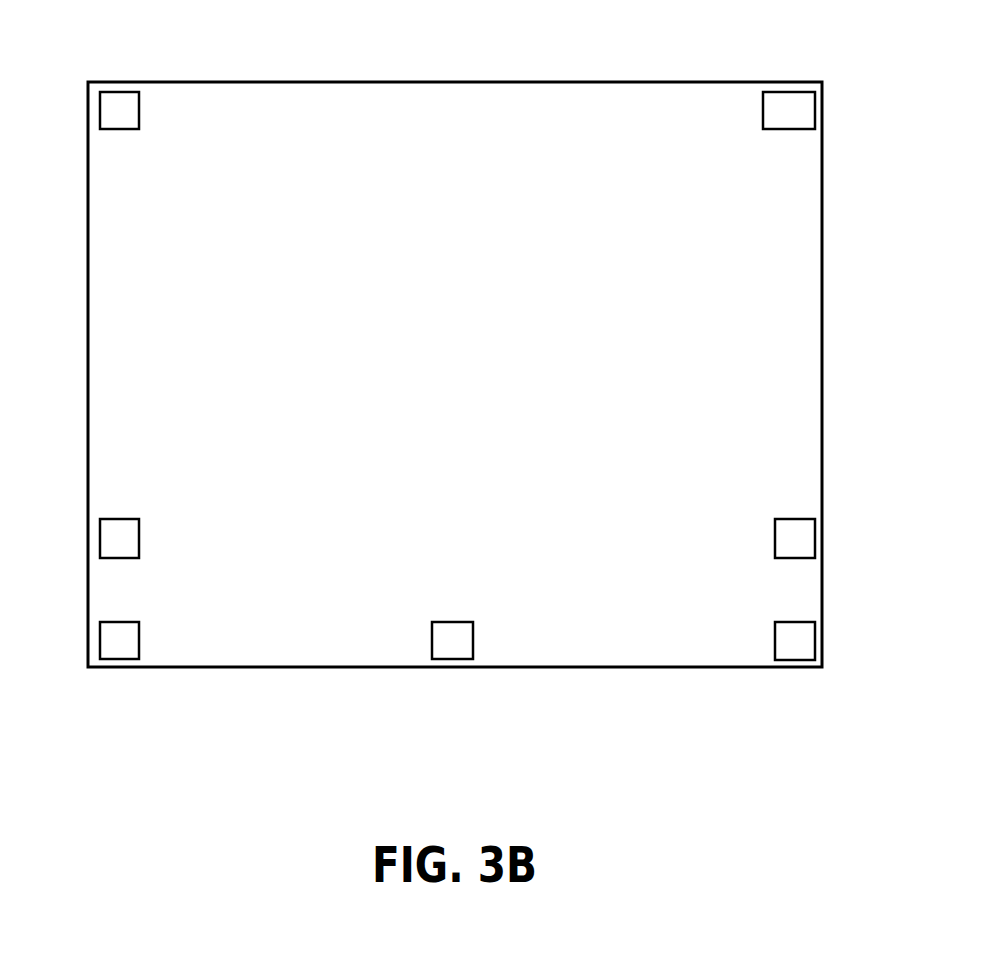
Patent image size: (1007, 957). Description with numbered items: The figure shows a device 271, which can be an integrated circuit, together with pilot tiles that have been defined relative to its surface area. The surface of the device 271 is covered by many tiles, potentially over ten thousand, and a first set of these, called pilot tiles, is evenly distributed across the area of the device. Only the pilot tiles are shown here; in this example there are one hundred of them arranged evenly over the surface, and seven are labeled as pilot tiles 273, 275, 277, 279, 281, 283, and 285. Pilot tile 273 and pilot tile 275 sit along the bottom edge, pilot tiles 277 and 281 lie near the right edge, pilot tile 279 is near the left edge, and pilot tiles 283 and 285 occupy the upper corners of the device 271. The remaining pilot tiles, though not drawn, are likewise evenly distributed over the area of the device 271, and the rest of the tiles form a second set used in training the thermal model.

The device 271 is at (545, 77).
The pilot tile 273 is at (100, 647).
The pilot tile 275 is at (432, 647).
The pilot tile 277 is at (815, 642).
The pilot tile 279 is at (100, 540).
The pilot tile 281 is at (815, 540).
The pilot tile 283 is at (100, 110).
The pilot tile 285 is at (815, 110).